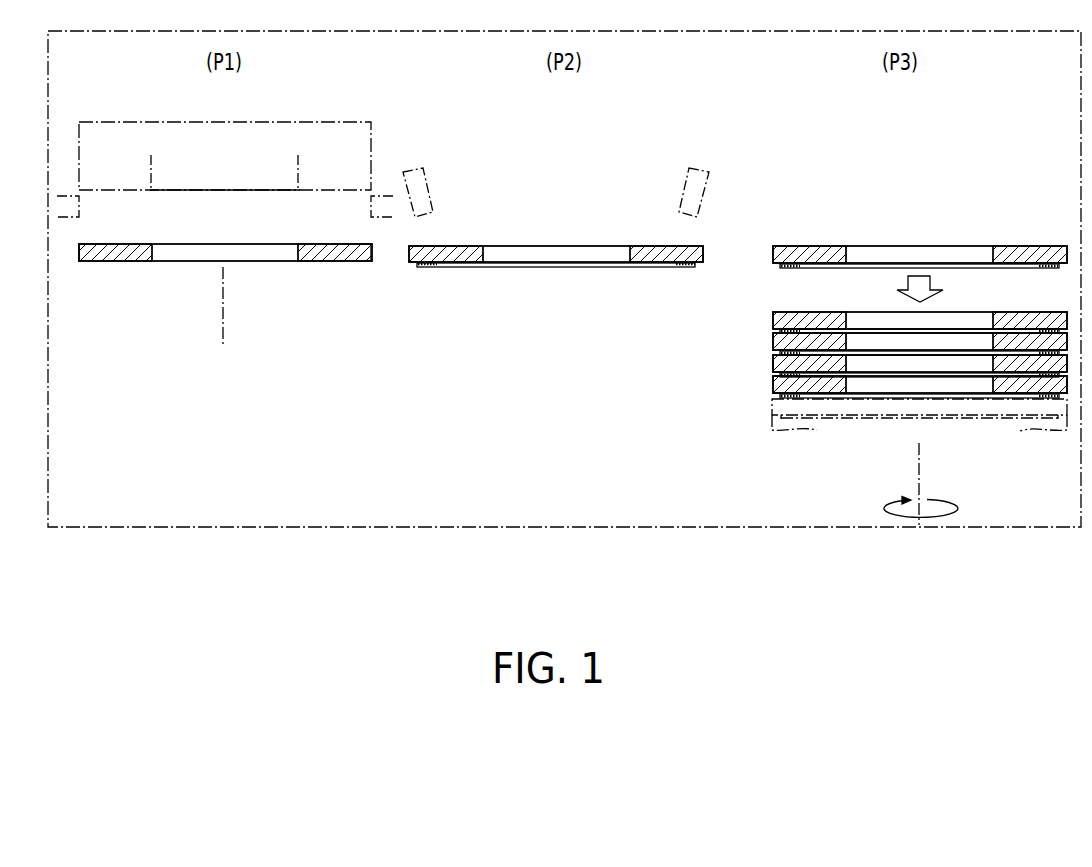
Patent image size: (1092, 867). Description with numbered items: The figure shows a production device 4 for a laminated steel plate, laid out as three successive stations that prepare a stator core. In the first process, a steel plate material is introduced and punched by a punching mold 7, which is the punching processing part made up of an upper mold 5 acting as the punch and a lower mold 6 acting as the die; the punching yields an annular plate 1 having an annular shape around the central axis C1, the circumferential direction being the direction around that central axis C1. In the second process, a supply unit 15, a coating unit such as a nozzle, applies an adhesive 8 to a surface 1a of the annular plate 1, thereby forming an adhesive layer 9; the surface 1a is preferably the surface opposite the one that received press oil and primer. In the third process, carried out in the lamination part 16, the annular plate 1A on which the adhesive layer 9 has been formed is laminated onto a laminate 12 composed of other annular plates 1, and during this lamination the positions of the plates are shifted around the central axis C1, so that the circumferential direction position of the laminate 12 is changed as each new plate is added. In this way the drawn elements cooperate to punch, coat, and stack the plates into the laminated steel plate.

The annular plate 1 is at (331, 263).
The annular plate 1A is at (1036, 245).
The surface 1a is at (643, 268).
The production device 4 is at (673, 529).
The upper mold 5 is at (210, 191).
The lower mold 6 is at (80, 205).
The punching mold 7 is at (347, 115).
The adhesive 8 is at (735, 344).
The adhesive layer 9 is at (423, 270).
The laminate 12 is at (1002, 452).
The supply unit 15 is at (425, 183).
The lamination part 16 is at (996, 211).
The central axis C1 is at (225, 323).